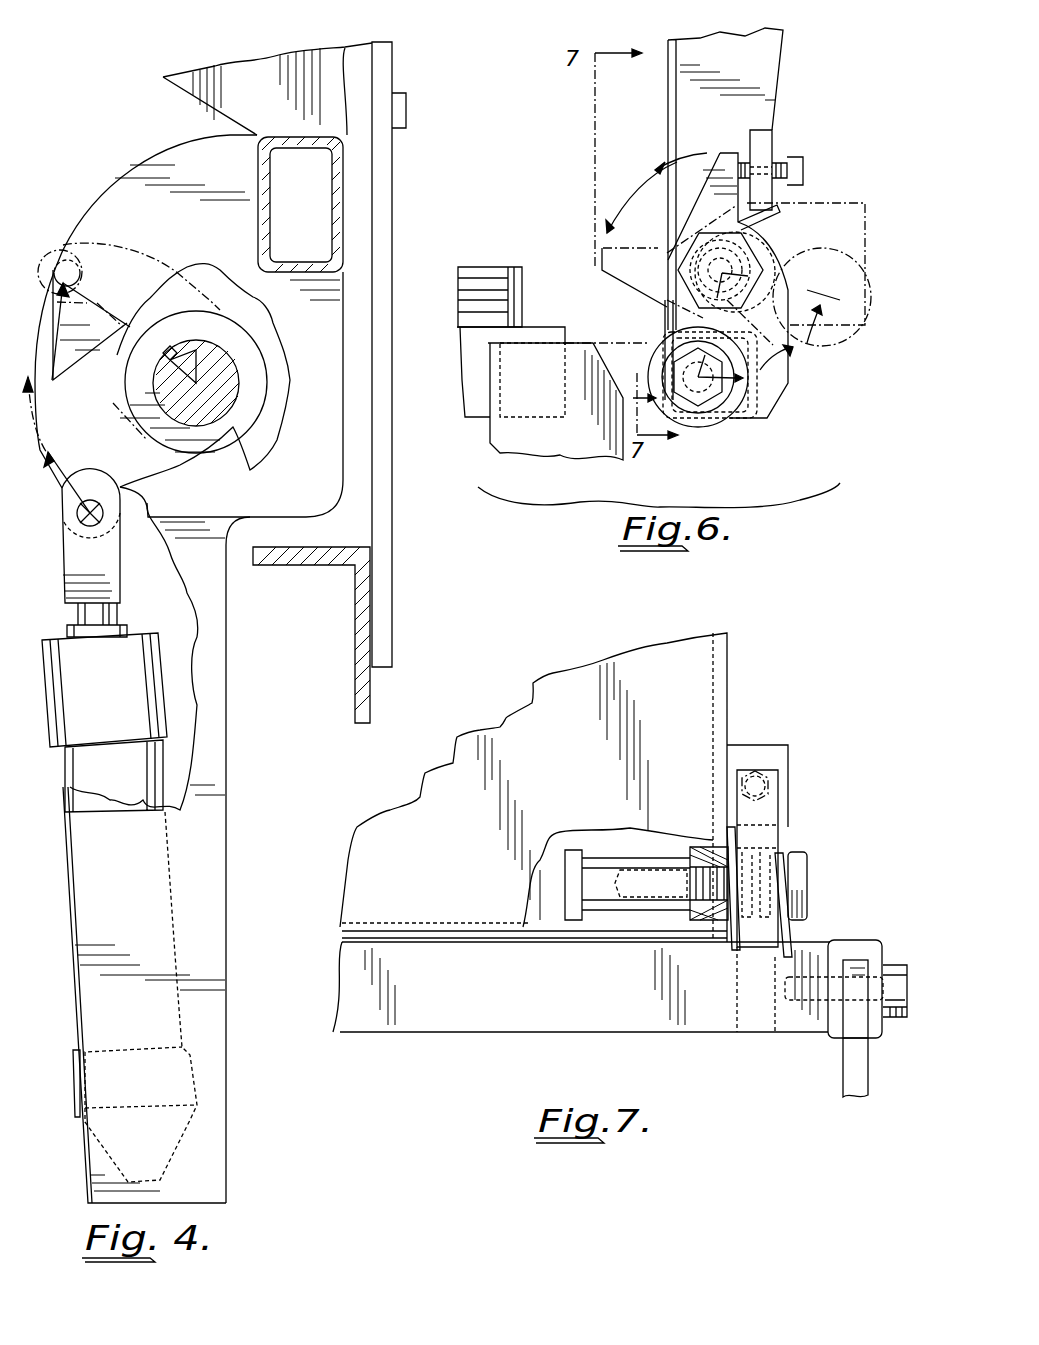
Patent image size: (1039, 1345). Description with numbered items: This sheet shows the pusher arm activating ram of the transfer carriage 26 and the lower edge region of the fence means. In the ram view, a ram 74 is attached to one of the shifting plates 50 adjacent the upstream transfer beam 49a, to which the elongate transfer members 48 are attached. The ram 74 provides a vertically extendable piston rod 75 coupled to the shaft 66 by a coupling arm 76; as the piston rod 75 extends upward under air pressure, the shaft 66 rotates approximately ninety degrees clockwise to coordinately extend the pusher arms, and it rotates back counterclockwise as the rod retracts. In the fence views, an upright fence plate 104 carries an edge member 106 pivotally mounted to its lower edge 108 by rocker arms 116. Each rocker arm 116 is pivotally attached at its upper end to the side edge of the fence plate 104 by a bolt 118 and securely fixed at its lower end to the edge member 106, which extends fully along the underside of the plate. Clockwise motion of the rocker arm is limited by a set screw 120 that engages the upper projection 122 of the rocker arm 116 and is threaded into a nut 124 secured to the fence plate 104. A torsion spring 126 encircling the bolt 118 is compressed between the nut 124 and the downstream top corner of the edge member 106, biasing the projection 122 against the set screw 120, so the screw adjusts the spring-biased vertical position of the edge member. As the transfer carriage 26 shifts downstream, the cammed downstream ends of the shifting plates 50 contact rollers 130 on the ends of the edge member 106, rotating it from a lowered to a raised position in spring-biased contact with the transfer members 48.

In FIG. 6, the transfer carriage 26 is at (540, 320).
In FIG. 6, the transfer members 48 is at (482, 408).
In FIG. 4, the upstream transfer beam 49a is at (300, 204).
In FIG. 6, the shifting plates 50 is at (555, 443).
In FIG. 7, the shifting plates 50 is at (843, 1085).
In FIG. 4, the shaft 66 is at (263, 370).
In FIG. 4, the ram 74 is at (82, 770).
In FIG. 4, the piston rod 75 is at (108, 613).
In FIG. 4, the coupling arm 76 is at (130, 240).
In FIG. 6, the fence plate 104 is at (768, 57).
In FIG. 7, the fence plate 104 is at (718, 707).
In FIG. 6, the edge member 106 is at (778, 393).
In FIG. 7, the edge member 106 is at (620, 1020).
In FIG. 7, the lower edge 108 is at (473, 940).
In FIG. 6, the rocker arms 116 is at (658, 217).
In FIG. 7, the rocker arms 116 is at (755, 1015).
In FIG. 6, the bolt 118 is at (751, 266).
In FIG. 7, the bolt 118 is at (805, 860).
In FIG. 6, the set screw 120 is at (803, 163).
In FIG. 7, the set screw 120 is at (770, 786).
In FIG. 6, the upper projection 122 is at (730, 160).
In FIG. 7, the upper projection 122 is at (770, 830).
In FIG. 6, the nut 124 is at (762, 147).
In FIG. 6, the torsion spring 126 is at (793, 215).
In FIG. 7, the torsion spring 126 is at (790, 935).
In FIG. 6, the rollers 130 is at (710, 427).
In FIG. 7, the rollers 130 is at (862, 942).